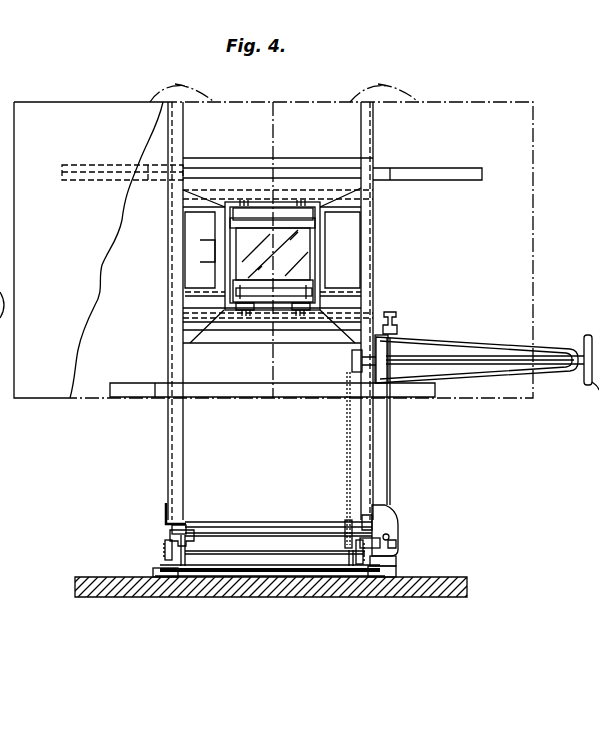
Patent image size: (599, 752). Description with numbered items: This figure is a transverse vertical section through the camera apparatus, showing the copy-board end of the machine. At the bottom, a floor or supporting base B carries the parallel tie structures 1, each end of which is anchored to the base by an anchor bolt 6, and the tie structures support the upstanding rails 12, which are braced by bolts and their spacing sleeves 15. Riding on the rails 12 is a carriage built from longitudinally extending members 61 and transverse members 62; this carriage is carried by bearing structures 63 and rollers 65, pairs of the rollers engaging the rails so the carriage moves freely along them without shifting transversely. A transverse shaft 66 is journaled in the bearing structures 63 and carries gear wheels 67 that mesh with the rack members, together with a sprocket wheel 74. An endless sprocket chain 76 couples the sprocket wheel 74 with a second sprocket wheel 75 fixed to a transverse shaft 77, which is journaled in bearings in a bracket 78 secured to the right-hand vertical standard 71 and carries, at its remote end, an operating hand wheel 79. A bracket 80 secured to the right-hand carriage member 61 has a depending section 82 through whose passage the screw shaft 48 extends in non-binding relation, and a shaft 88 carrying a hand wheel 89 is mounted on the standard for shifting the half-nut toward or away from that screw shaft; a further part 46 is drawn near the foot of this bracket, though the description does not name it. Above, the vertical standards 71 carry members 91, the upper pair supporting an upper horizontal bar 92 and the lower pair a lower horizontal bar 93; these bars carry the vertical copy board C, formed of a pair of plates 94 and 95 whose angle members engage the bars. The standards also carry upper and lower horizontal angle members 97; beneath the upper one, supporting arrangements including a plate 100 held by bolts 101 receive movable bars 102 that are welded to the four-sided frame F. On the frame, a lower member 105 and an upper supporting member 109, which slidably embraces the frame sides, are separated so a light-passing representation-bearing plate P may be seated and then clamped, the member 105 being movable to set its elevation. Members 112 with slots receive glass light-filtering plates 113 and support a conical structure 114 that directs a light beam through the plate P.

The copy board C is at (86, 102).
The plate 94 is at (182, 82).
The plate 95 is at (384, 82).
The vertical standard 71 is at (184, 135).
The member 91 is at (152, 180).
The upper horizontal bar 92 is at (433, 168).
The horizontal member 97 is at (372, 190).
The four-sided frame F is at (317, 247).
The light-passing representation-bearing plate P is at (298, 270).
The upper supporting member 109 is at (284, 222).
The member 105 is at (274, 284).
The member 112 is at (214, 288).
The light-filtering plate 113 is at (215, 250).
The movable bar 102 is at (240, 198).
The plate 100 is at (240, 310).
The bolt 101 is at (262, 312).
The conical structure 114 is at (280, 330).
The lower horizontal bar 93 is at (150, 397).
The bracket 78 is at (458, 344).
The transverse shaft 77 is at (506, 356).
The operating hand wheel 79 is at (586, 336).
The hand wheel 89 is at (397, 323).
The sprocket wheel 75 is at (352, 360).
The shaft 88 is at (391, 432).
The endless sprocket chain 76 is at (347, 455).
The transverse member 62 is at (250, 522).
The transverse shaft 66 is at (281, 533).
The spacing sleeve 15 is at (208, 551).
The tie structure 1 is at (292, 570).
The floor B is at (224, 596).
The longitudinally extending member 61 is at (166, 514).
The bearing structure 63 is at (172, 528).
The roller 65 is at (170, 537).
The rail 12 is at (165, 548).
The gear wheel 67 is at (183, 566).
The anchor bolt 6 is at (168, 578).
The bracket 80 is at (392, 516).
The screw shaft 48 is at (390, 536).
The bracket section 82 is at (397, 544).
The foot 46 is at (396, 560).
The sprocket wheel 74 is at (348, 524).